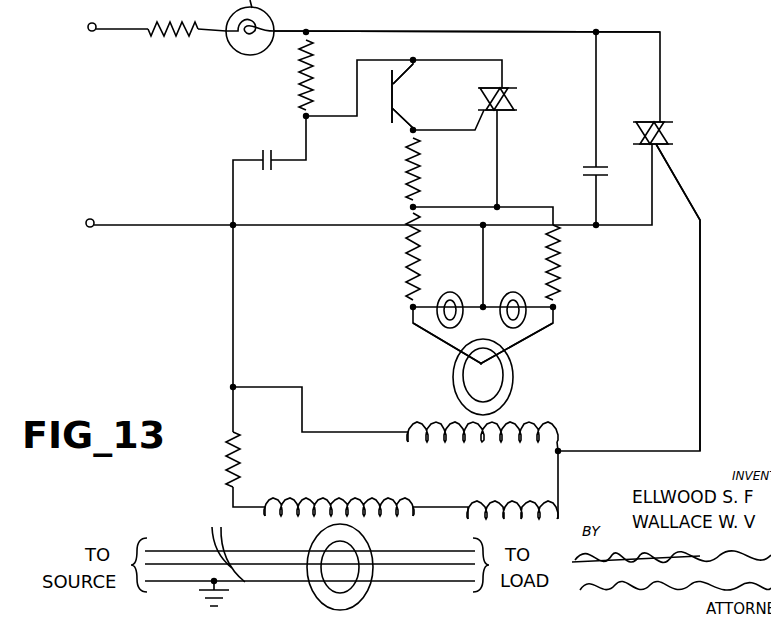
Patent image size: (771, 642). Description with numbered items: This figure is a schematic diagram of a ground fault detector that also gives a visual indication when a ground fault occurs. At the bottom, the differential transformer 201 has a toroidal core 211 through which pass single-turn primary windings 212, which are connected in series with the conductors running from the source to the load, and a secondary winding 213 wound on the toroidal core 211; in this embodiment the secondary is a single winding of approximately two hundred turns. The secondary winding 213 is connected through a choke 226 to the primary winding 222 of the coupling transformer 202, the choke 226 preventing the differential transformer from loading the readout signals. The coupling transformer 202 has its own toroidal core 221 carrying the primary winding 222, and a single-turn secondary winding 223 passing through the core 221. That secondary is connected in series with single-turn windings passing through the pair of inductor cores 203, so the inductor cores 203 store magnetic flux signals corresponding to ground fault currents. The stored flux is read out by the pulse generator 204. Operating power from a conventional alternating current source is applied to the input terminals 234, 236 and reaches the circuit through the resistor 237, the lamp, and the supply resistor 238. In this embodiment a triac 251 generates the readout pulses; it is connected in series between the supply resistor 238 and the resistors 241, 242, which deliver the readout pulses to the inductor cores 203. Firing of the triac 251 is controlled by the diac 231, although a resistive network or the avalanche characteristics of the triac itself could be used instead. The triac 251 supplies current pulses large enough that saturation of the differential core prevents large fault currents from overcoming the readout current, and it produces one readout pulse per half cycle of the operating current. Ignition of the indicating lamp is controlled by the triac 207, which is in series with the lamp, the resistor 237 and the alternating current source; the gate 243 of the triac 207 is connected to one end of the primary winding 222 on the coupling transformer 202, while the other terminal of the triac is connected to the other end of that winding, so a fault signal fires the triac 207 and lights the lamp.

The differential transformer 201 is at (290, 603).
The coupling transformer 202 is at (520, 400).
The inductor cores 203 is at (450, 292).
The pulse generator 204 is at (486, 48).
The triac switching element 207 is at (670, 122).
The toroidal core 211 is at (360, 590).
The single-turn primary windings 212 is at (214, 550).
The secondary winding 213 is at (365, 497).
The toroidal core 221 is at (462, 375).
The primary winding 222 is at (472, 438).
The single-turn secondary winding 223 is at (535, 335).
The choke 226 is at (523, 503).
The diac 231 is at (386, 103).
The input terminal 234 is at (88, 24).
The input terminal 236 is at (86, 221).
The resistor 237 is at (176, 38).
The supply resistor 238 is at (296, 72).
The resistor 241 is at (412, 262).
The resistor 242 is at (562, 271).
The gate 243 is at (685, 183).
The triac 251 is at (510, 97).